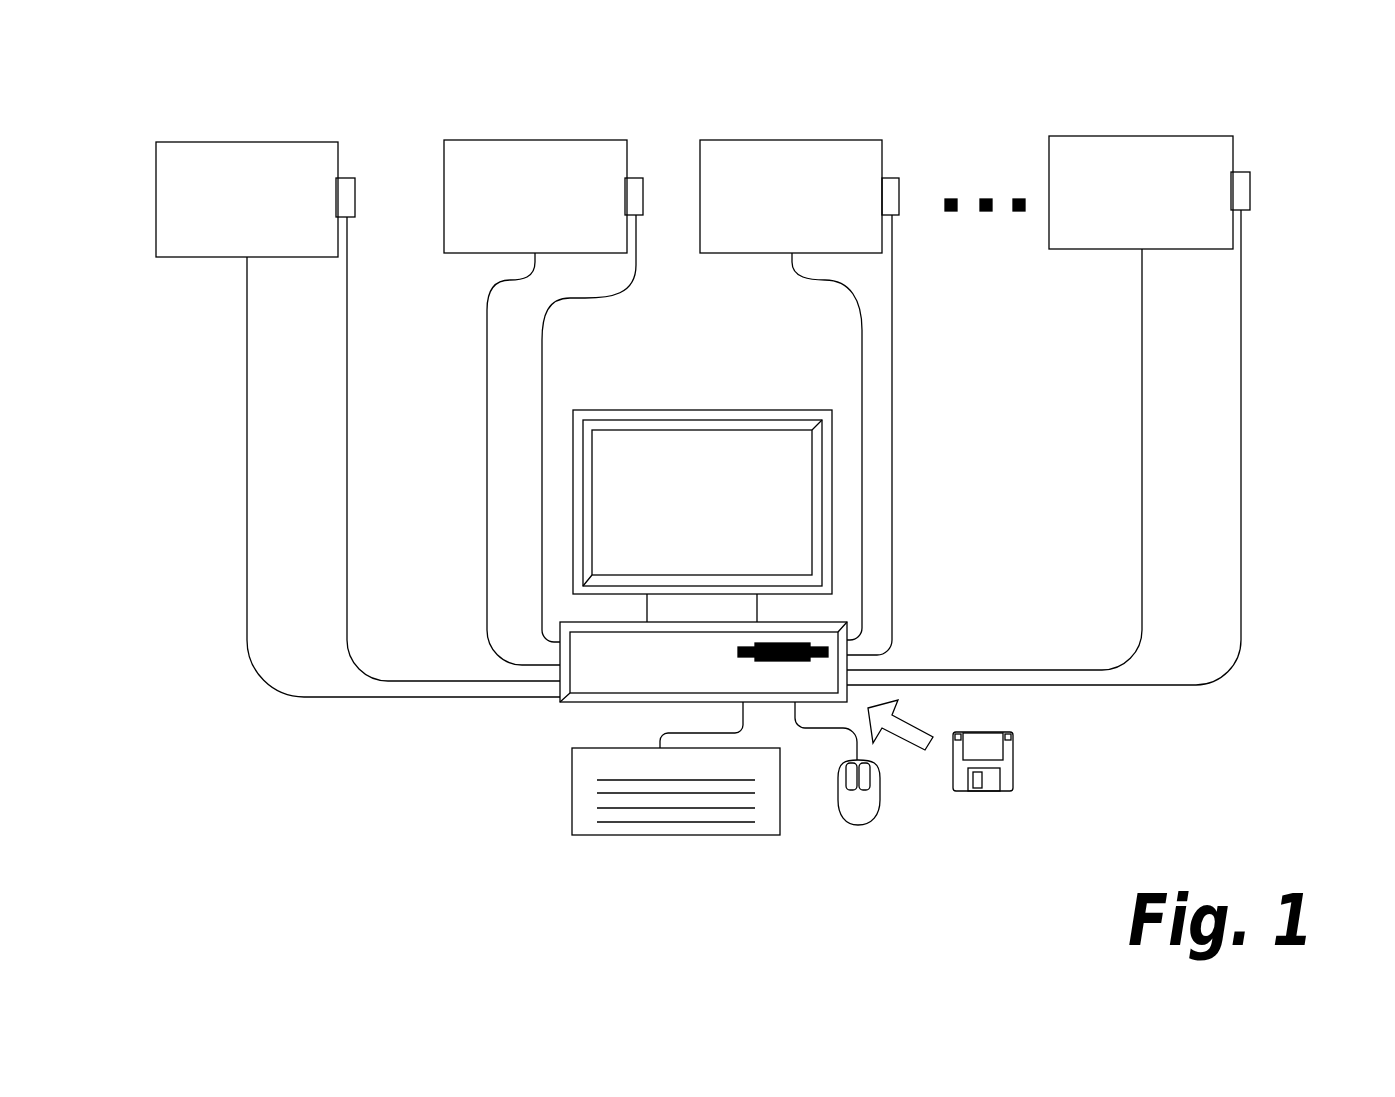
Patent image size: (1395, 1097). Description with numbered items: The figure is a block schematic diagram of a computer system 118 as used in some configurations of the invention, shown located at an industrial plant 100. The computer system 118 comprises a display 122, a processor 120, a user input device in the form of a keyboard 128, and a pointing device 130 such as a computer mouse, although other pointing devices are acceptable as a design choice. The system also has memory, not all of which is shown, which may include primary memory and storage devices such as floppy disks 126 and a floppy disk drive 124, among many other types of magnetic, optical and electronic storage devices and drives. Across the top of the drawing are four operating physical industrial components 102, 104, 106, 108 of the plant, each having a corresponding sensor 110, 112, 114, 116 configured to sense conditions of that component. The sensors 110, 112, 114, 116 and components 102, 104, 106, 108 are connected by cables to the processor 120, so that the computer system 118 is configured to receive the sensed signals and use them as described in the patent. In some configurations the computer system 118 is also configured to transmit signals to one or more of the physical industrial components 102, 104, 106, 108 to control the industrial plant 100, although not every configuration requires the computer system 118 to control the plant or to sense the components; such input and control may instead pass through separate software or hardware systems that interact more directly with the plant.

The industrial plant 100 is at (257, 737).
The physical industrial component 102 is at (246, 142).
The physical industrial component 104 is at (537, 140).
The physical industrial component 106 is at (790, 140).
The physical industrial component 108 is at (1138, 136).
The sensor 110 is at (355, 182).
The sensor 112 is at (644, 193).
The sensor 114 is at (899, 200).
The sensor 116 is at (1250, 188).
The computer system 118 is at (446, 741).
The processor 120 is at (630, 672).
The display 122 is at (705, 507).
The floppy disk drive 124 is at (780, 662).
The floppy disk 126 is at (1013, 760).
The keyboard 128 is at (680, 836).
The pointing device 130 is at (880, 790).